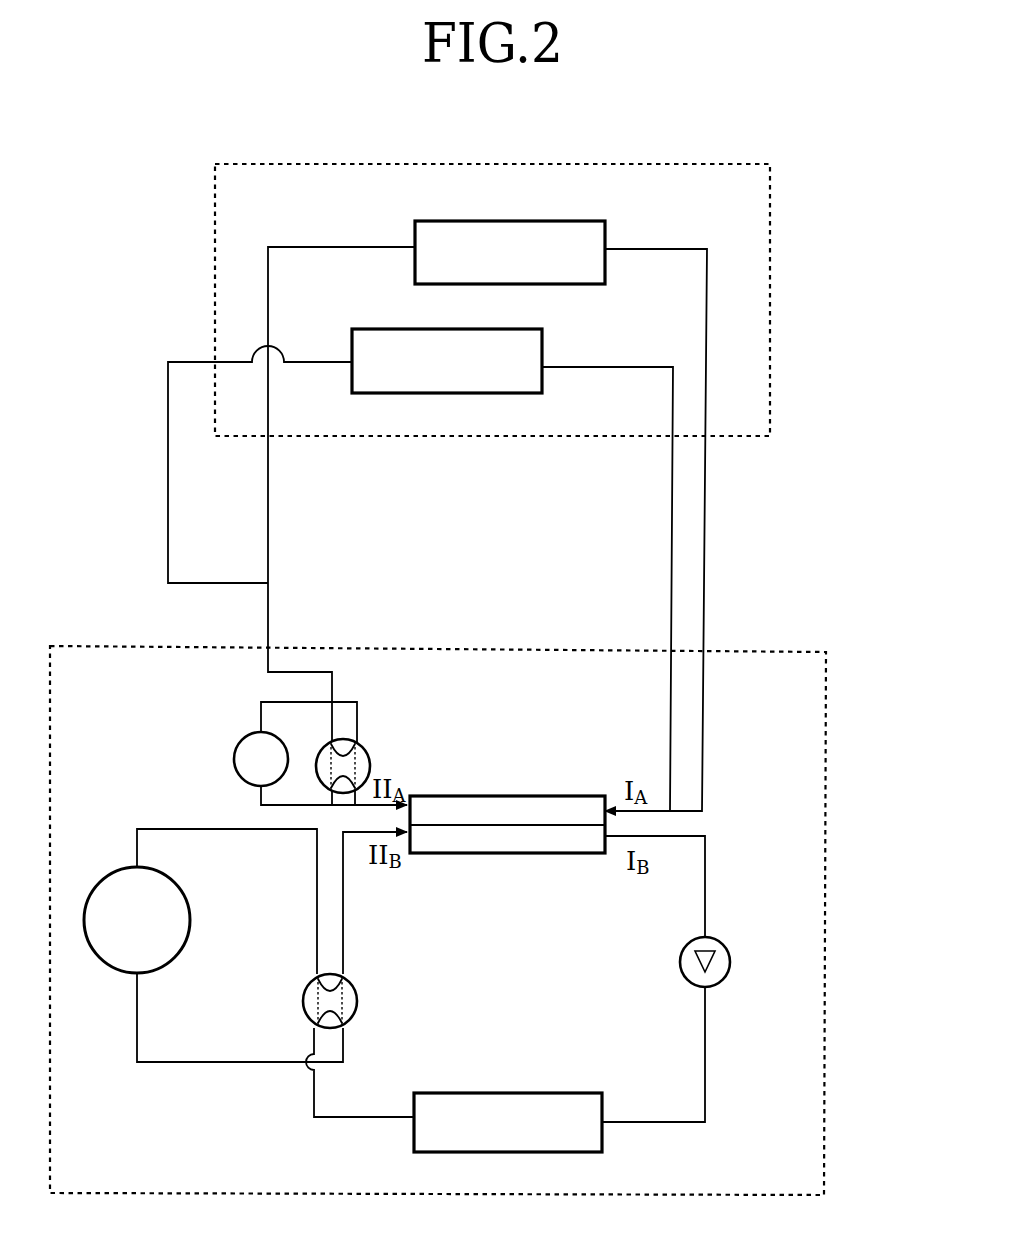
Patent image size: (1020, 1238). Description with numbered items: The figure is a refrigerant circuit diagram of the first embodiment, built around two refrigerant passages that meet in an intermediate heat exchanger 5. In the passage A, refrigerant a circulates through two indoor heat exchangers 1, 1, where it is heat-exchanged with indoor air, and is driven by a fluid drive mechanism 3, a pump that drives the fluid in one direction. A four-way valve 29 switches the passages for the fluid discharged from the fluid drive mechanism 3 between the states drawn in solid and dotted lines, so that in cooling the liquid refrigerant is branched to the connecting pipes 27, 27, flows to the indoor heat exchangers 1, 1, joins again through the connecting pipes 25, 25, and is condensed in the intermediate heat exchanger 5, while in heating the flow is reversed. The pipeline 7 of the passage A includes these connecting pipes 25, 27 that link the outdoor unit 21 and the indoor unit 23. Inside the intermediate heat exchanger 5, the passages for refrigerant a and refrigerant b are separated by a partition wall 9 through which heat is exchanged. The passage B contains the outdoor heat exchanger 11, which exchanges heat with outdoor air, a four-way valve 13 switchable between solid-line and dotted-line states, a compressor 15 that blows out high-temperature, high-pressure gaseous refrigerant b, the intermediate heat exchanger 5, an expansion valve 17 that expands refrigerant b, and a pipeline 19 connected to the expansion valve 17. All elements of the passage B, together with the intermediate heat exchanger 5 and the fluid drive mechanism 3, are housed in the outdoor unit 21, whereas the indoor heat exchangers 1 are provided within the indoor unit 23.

The indoor heat exchanger 1 is at (508, 285).
The fluid drive mechanism 3 is at (230, 752).
The intermediate heat exchanger 5 is at (500, 853).
The pipeline 7 is at (718, 405).
The partition wall 9 is at (500, 822).
The outdoor heat exchanger 11 is at (525, 1093).
The 4-way valve 13 is at (352, 990).
The compressor 15 is at (176, 881).
The expansion valve 17 is at (729, 952).
The pipeline 19 is at (740, 897).
The outdoor unit 21 is at (828, 748).
The indoor unit 23 is at (771, 233).
The connecting pipe 25 is at (672, 570).
The connecting pipe 27 is at (267, 530).
The 4-way valve 29 is at (370, 744).
The passage A is at (766, 491).
The passage B is at (742, 1082).